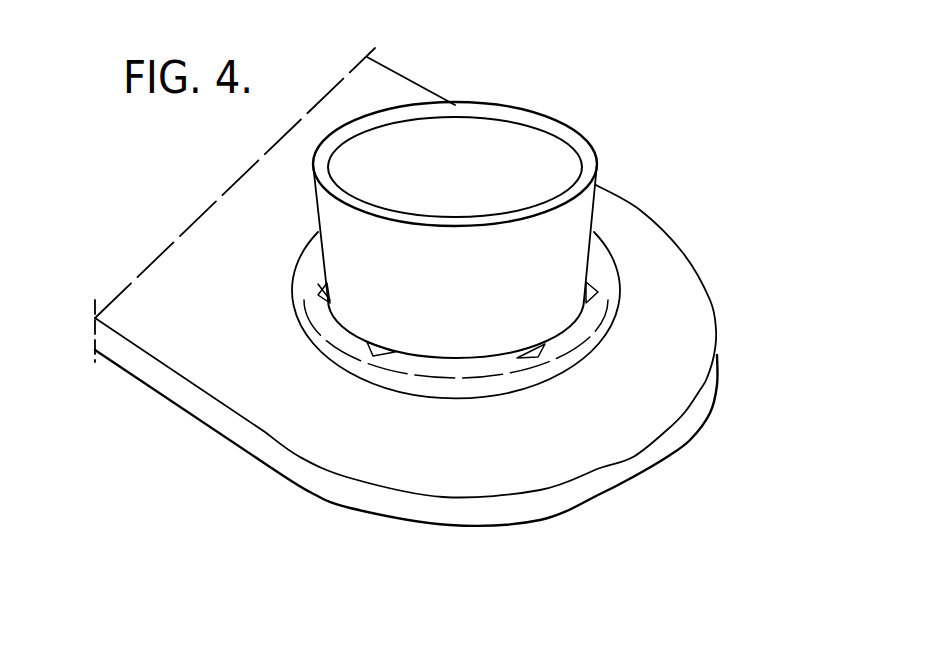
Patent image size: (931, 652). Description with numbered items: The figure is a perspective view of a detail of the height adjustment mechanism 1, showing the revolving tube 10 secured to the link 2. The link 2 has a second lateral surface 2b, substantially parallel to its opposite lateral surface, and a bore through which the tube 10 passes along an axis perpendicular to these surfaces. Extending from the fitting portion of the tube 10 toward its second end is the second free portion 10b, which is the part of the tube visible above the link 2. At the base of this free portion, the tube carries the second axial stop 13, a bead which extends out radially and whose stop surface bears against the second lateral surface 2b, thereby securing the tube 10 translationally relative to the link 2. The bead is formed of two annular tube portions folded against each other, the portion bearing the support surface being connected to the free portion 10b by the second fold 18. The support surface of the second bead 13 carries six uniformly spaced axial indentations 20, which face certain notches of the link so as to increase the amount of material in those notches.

The height adjustment mechanism 1 is at (441, 214).
The link 2 is at (372, 96).
The second lateral surface 2b is at (207, 423).
The revolving tube 10 is at (490, 146).
The second free portion 10b is at (560, 238).
The second axial stop 13 is at (610, 273).
The second fold 18 is at (570, 325).
The axial indentation 20 is at (328, 296).